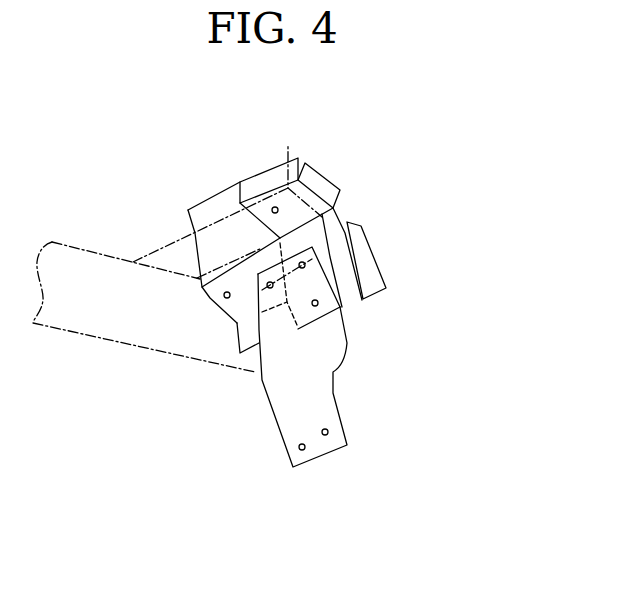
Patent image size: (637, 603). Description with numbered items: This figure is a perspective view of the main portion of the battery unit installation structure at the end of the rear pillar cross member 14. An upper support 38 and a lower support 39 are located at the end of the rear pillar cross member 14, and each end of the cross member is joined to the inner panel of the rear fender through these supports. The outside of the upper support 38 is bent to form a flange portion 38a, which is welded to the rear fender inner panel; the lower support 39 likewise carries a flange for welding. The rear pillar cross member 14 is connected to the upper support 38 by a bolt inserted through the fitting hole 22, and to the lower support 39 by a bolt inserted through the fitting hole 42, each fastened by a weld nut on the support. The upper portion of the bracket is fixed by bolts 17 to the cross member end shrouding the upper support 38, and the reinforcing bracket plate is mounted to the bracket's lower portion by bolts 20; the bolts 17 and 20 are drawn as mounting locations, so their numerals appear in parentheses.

The rear pillar cross member 14 is at (100, 250).
The lower support 39 is at (210, 252).
The fitting hole 22 is at (272, 209).
The flange portion 38a is at (270, 177).
The upper support 38 is at (338, 233).
The bolts 17 is at (273, 286).
The fitting hole 42 is at (227, 298).
The bolts 20 is at (325, 435).